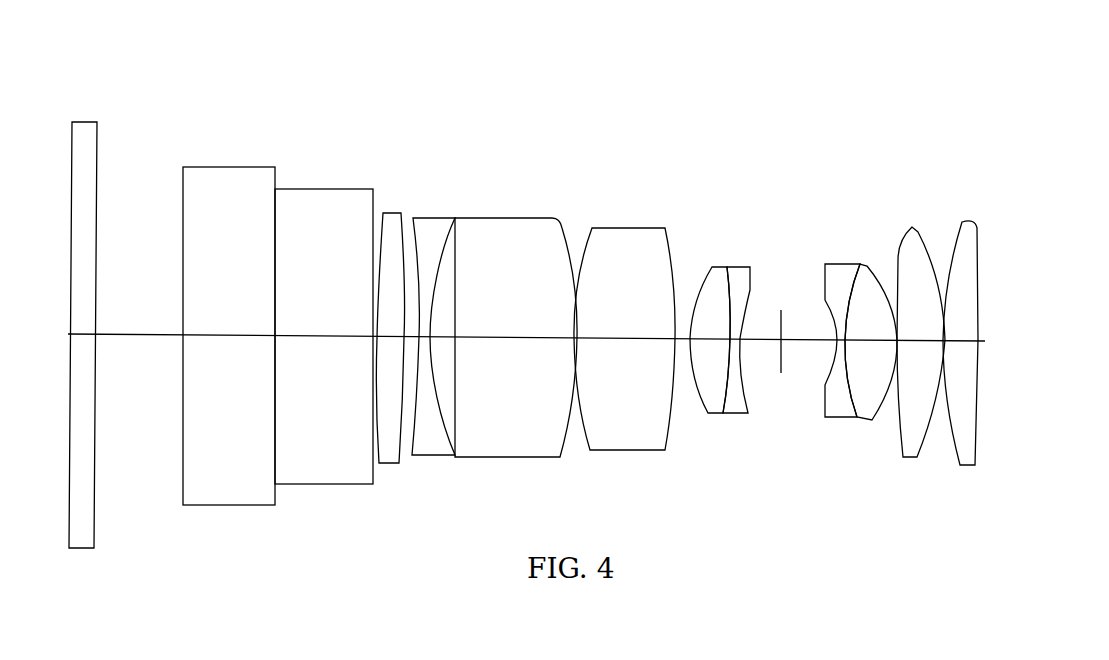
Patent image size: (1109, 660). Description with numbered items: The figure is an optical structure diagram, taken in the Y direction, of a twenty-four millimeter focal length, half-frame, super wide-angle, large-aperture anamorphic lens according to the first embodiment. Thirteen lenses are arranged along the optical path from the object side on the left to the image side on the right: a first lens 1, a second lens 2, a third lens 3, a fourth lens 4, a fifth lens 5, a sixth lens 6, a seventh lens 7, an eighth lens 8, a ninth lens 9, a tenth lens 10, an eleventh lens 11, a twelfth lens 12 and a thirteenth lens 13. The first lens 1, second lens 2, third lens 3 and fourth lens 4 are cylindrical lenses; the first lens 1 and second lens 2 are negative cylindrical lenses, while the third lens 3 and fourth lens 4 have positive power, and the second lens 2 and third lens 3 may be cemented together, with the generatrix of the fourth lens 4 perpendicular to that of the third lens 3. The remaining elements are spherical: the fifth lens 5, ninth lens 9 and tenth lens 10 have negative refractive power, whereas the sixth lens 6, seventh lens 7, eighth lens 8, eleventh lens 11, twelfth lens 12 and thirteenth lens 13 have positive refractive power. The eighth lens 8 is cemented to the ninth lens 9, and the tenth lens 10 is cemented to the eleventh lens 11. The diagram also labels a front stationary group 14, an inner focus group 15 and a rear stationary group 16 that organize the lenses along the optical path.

The first lens 1 is at (83, 130).
The second lens 2 is at (211, 183).
The third lens 3 is at (321, 207).
The fourth lens 4 is at (391, 222).
The fifth lens 5 is at (431, 230).
The sixth lens 6 is at (520, 230).
The seventh lens 7 is at (615, 238).
The eighth lens 8 is at (712, 287).
The ninth lens 9 is at (739, 277).
The tenth lens 10 is at (840, 273).
The eleventh lens 11 is at (872, 287).
The twelfth lens 12 is at (912, 243).
The thirteenth lens 13 is at (967, 233).
The front stationary group 14 is at (84, 335).
The inner focus group 15 is at (380, 341).
The rear stationary group 16 is at (776, 351).